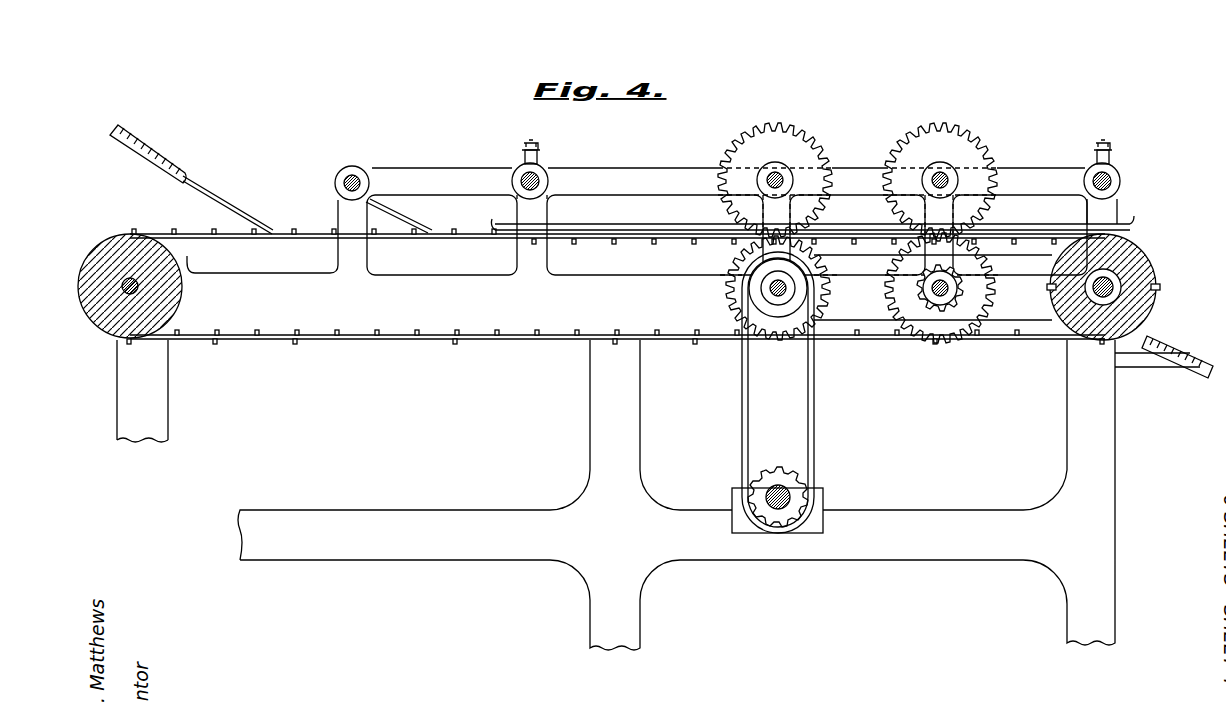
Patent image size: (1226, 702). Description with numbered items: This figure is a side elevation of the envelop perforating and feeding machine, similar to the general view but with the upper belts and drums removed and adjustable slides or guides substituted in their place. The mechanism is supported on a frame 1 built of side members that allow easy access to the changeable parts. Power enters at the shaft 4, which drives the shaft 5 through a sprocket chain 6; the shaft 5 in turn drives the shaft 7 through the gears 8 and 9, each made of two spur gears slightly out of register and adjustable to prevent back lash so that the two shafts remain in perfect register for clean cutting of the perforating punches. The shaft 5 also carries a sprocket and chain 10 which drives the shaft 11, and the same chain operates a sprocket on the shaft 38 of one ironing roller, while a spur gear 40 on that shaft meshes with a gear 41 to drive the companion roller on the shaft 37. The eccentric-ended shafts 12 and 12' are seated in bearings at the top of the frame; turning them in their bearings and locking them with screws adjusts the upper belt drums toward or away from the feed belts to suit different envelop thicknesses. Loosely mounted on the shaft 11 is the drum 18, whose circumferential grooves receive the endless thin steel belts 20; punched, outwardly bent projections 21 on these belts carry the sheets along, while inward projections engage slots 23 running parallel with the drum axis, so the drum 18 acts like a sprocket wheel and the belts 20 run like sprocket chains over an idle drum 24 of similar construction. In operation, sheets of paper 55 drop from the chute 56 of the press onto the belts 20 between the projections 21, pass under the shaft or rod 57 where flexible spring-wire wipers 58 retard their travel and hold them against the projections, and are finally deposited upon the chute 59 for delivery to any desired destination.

The frame 1 is at (1084, 446).
The shaft 4 is at (777, 512).
The shaft 5 is at (778, 300).
The sprocket chain 6 is at (813, 432).
The shaft 7 is at (768, 176).
The gear 8 is at (808, 140).
The gear 9 is at (722, 290).
The sprocket and chain 10 is at (1045, 318).
The shaft 11 is at (1110, 282).
The eccentric shaft 12 is at (835, 185).
The eccentric shaft 12' is at (553, 169).
The drum 18 is at (1154, 274).
The belts 20 is at (403, 343).
The projections 21 is at (290, 234).
The slots 23 is at (1053, 288).
The idle drum 24 is at (178, 303).
The shaft 37 is at (937, 172).
The shaft 38 is at (940, 300).
The spur gear 40 is at (898, 304).
The gear 41 is at (953, 150).
The sheets of paper 55 is at (233, 208).
The chute 56 is at (148, 160).
The shaft or rod 57 is at (352, 166).
The wipers 58 is at (407, 217).
The chute 59 is at (1196, 368).